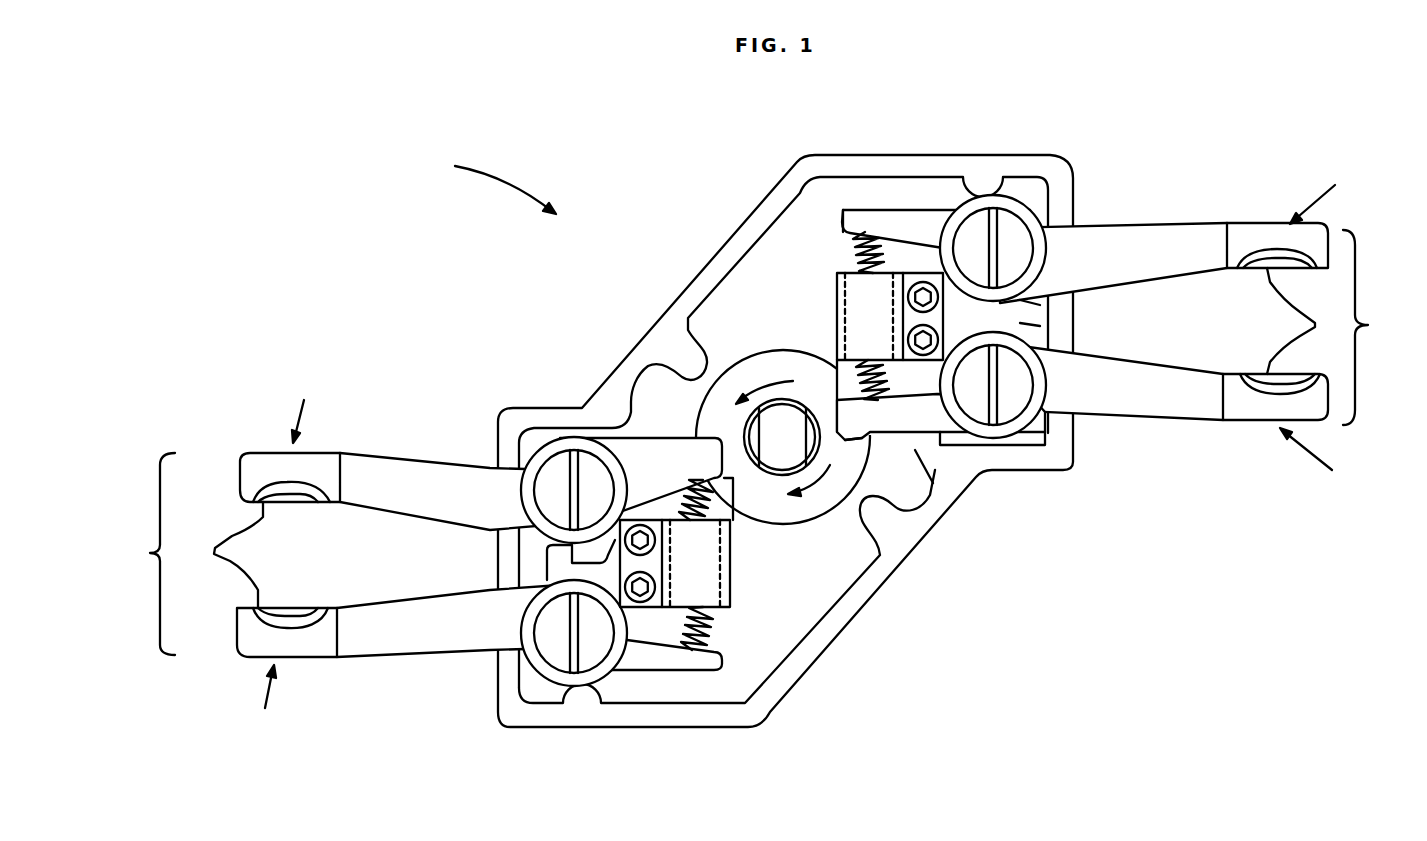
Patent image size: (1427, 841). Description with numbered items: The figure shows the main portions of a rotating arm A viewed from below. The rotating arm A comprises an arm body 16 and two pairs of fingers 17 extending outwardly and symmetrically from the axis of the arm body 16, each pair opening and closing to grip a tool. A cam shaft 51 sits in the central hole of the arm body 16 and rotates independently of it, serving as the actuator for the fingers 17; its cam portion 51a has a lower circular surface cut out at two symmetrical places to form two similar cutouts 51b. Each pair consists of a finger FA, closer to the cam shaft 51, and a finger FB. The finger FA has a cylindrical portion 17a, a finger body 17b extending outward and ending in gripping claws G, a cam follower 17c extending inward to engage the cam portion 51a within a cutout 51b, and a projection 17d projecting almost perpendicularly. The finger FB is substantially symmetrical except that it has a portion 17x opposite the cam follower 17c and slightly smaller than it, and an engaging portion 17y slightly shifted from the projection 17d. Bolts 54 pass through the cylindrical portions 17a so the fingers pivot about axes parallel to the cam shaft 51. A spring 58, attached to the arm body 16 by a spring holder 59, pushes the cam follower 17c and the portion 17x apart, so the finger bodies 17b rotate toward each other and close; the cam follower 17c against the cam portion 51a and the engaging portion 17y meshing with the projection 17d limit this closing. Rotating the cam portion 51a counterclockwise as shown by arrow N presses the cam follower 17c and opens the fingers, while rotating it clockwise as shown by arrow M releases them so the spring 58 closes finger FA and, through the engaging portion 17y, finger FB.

The arm body 16 is at (930, 535).
The fingers 17 is at (754, 442).
The cylindrical portion 17a is at (1050, 207).
The finger body 17b is at (1197, 222).
The cam follower 17c is at (890, 495).
The projection 17d is at (1020, 323).
The portion opposite to the cam follower 17x is at (877, 208).
The engaging portion 17y is at (1020, 300).
The cam shaft 51 is at (785, 543).
The cam portion 51a is at (807, 524).
The cutouts 51b is at (866, 440).
The bolts 54 is at (1010, 208).
The spring 58 is at (835, 360).
The spring holder 59 is at (835, 270).
The rotating arm A is at (492, 177).
The gripping claws G is at (758, 438).
The finger FA is at (824, 430).
The finger FB is at (808, 441).
The arrow N is at (748, 403).
The arrow M is at (787, 488).